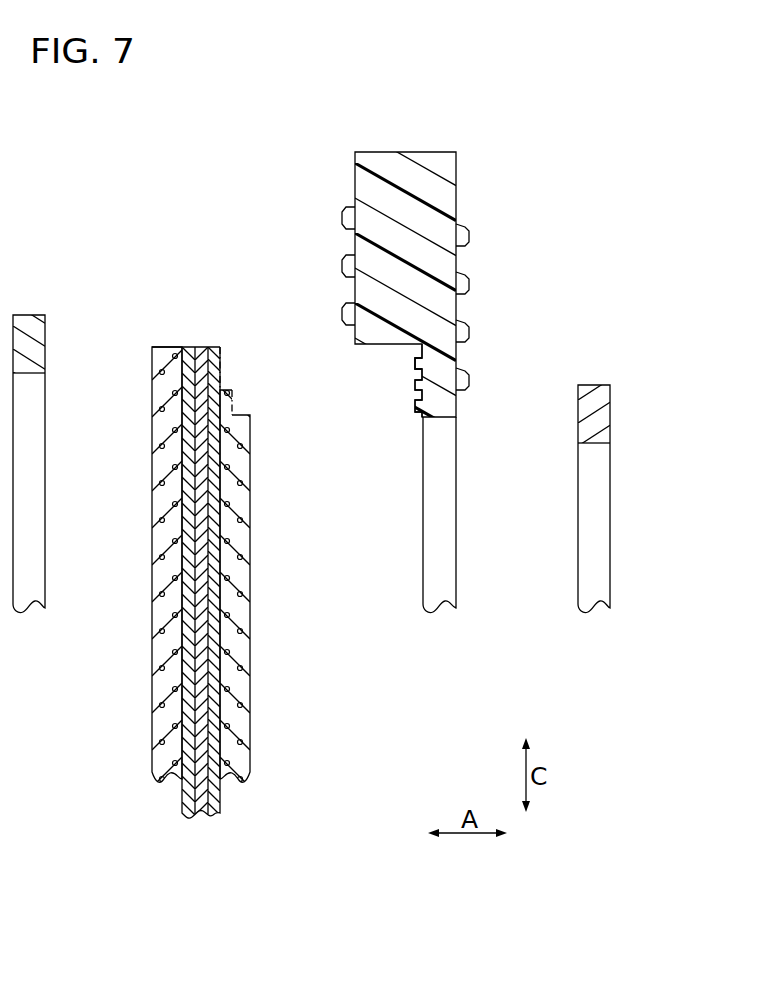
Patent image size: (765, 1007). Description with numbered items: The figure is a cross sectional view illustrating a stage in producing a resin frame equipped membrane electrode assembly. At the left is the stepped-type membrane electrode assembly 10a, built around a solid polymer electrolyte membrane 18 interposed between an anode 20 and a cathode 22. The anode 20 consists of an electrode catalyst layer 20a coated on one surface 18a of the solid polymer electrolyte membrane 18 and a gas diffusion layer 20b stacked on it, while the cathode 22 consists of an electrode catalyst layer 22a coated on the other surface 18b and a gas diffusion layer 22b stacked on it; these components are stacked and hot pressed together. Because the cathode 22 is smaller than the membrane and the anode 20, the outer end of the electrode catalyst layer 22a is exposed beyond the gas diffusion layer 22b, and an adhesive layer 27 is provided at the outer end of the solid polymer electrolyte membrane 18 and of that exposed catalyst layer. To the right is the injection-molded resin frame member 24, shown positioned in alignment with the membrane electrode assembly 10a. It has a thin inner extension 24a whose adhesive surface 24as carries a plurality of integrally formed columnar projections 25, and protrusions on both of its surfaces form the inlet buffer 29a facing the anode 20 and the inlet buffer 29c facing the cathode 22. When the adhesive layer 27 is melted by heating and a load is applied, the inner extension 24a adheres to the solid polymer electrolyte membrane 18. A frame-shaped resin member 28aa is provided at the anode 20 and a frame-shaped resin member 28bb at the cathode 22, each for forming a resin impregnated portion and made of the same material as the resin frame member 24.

The membrane electrode assembly 10a is at (178, 343).
The solid polymer electrolyte membrane 18 is at (202, 820).
The surface of solid polymer electrolyte membrane 18a is at (193, 753).
The surface of solid polymer electrolyte membrane 18b is at (212, 740).
The anode 20 is at (72, 633).
The electrode catalyst layer 20a is at (183, 690).
The gas diffusion layer 20b is at (167, 643).
The cathode 22 is at (330, 632).
The electrode catalyst layer 22a is at (218, 690).
The gas diffusion layer 22b is at (233, 643).
The resin frame member 24 is at (401, 142).
The inner extension 24a is at (445, 400).
The adhesive surface 24as is at (418, 395).
The columnar projections 25 is at (413, 360).
The adhesive layer 27 is at (217, 373).
The resin member 28aa is at (31, 322).
The resin member 28bb is at (595, 390).
The inlet buffer 29a is at (344, 216).
The inlet buffer 29c is at (470, 236).